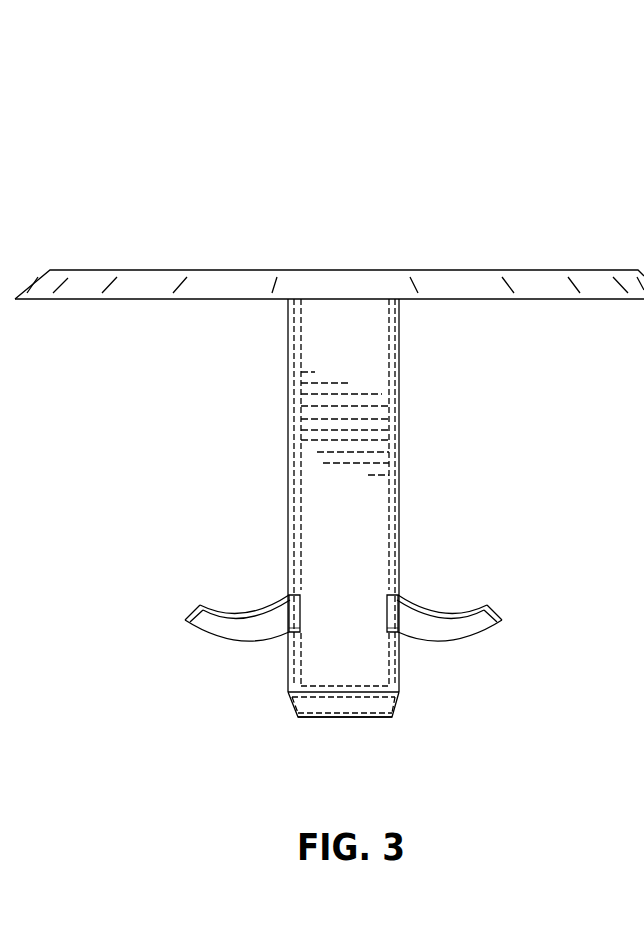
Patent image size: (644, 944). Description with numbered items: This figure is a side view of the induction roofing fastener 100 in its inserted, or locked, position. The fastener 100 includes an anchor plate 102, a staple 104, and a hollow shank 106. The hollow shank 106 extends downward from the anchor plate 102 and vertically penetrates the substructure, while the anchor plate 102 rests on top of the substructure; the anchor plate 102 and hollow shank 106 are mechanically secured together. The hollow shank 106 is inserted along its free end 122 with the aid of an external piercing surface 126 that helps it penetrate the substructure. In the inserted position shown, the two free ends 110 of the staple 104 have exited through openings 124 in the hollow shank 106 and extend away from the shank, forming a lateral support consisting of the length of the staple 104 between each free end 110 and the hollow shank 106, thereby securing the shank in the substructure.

The induction roofing fastener 100 is at (190, 182).
The anchor plate 102 is at (536, 270).
The staple 104 is at (268, 590).
The hollow shank 106 is at (287, 410).
The free ends 110 is at (199, 604).
The free end of the hollow shank 122 is at (392, 718).
The openings 124 is at (290, 631).
The piercing surface 126 is at (342, 708).